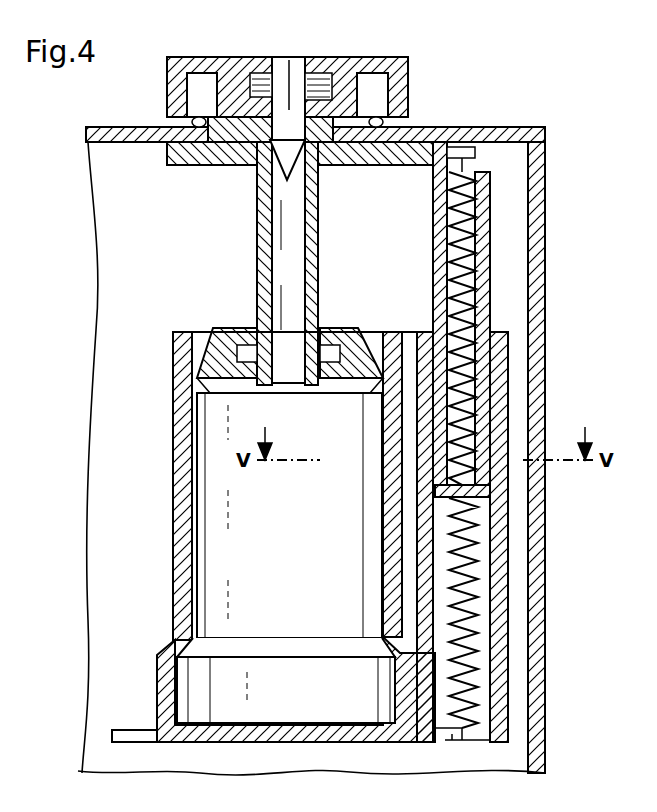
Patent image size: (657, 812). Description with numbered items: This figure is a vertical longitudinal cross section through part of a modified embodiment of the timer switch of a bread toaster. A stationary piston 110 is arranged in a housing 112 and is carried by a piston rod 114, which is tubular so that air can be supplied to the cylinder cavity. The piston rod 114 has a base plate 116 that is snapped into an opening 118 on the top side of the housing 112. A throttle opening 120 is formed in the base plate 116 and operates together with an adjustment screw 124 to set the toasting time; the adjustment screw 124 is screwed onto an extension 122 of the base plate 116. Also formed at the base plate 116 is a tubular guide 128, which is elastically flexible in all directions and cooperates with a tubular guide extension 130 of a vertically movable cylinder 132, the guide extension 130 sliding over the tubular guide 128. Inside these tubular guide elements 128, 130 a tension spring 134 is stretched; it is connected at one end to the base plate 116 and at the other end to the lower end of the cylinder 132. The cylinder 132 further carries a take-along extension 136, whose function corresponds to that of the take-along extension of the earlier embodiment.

The stationary piston 110 is at (360, 328).
The housing 112 is at (538, 272).
The piston rod 114 is at (312, 275).
The base plate 116 is at (222, 158).
The opening 118 is at (192, 118).
The throttle opening 120 is at (294, 185).
The extension 122 is at (321, 80).
The adjustment screw 124 is at (406, 77).
The tubular guide 128 is at (497, 220).
The tubular guide extension 130 is at (503, 690).
The cylinder 132 is at (177, 466).
The tension spring 134 is at (478, 308).
The take-along extension 136 is at (134, 732).